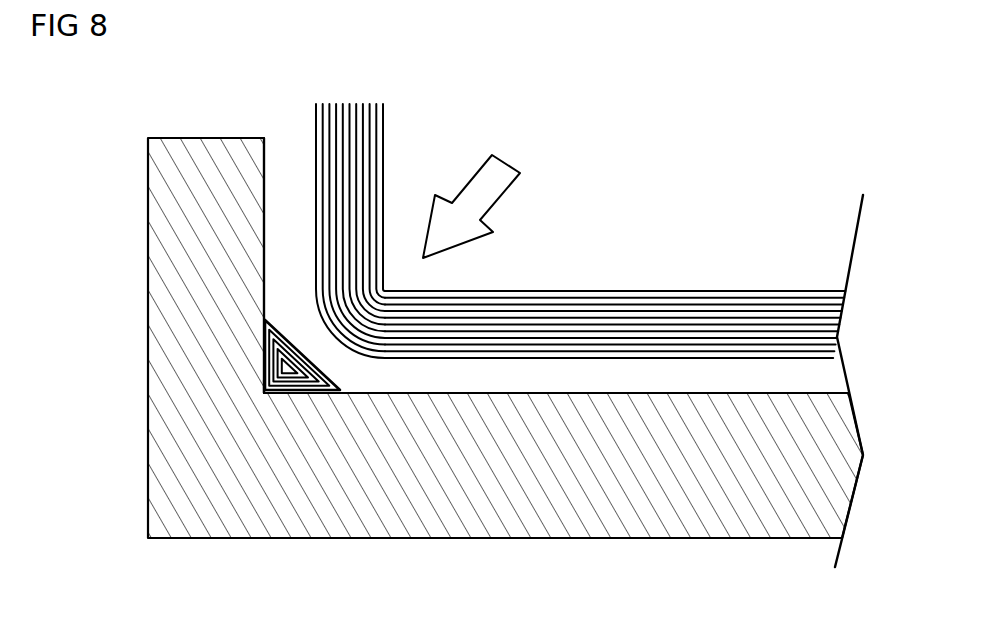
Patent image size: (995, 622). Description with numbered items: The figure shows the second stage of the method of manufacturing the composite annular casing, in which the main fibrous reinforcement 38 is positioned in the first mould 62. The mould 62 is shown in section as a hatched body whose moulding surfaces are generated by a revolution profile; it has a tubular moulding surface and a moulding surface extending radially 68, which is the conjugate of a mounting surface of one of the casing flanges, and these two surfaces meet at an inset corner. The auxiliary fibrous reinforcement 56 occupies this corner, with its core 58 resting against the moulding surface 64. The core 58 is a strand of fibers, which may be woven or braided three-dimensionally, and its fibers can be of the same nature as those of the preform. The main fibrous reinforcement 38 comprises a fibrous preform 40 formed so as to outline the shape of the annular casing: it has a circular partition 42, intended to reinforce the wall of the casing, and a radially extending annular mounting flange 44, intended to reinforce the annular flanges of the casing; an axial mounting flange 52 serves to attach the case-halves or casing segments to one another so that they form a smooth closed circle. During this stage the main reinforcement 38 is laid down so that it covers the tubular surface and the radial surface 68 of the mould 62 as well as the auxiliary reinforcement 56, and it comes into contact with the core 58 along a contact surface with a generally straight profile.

The main fibrous reinforcement 38 is at (775, 143).
The fibrous preform 40 is at (657, 191).
The circular partition 42 is at (602, 290).
The annular mounting flange 44 is at (394, 192).
The axial mounting flange 52 is at (378, 104).
The auxiliary fibrous reinforcement 56 is at (267, 393).
The core 58 is at (273, 362).
The first mould 62 is at (175, 213).
The moulding surface 64 is at (427, 392).
The radial moulding surface 68 is at (264, 165).